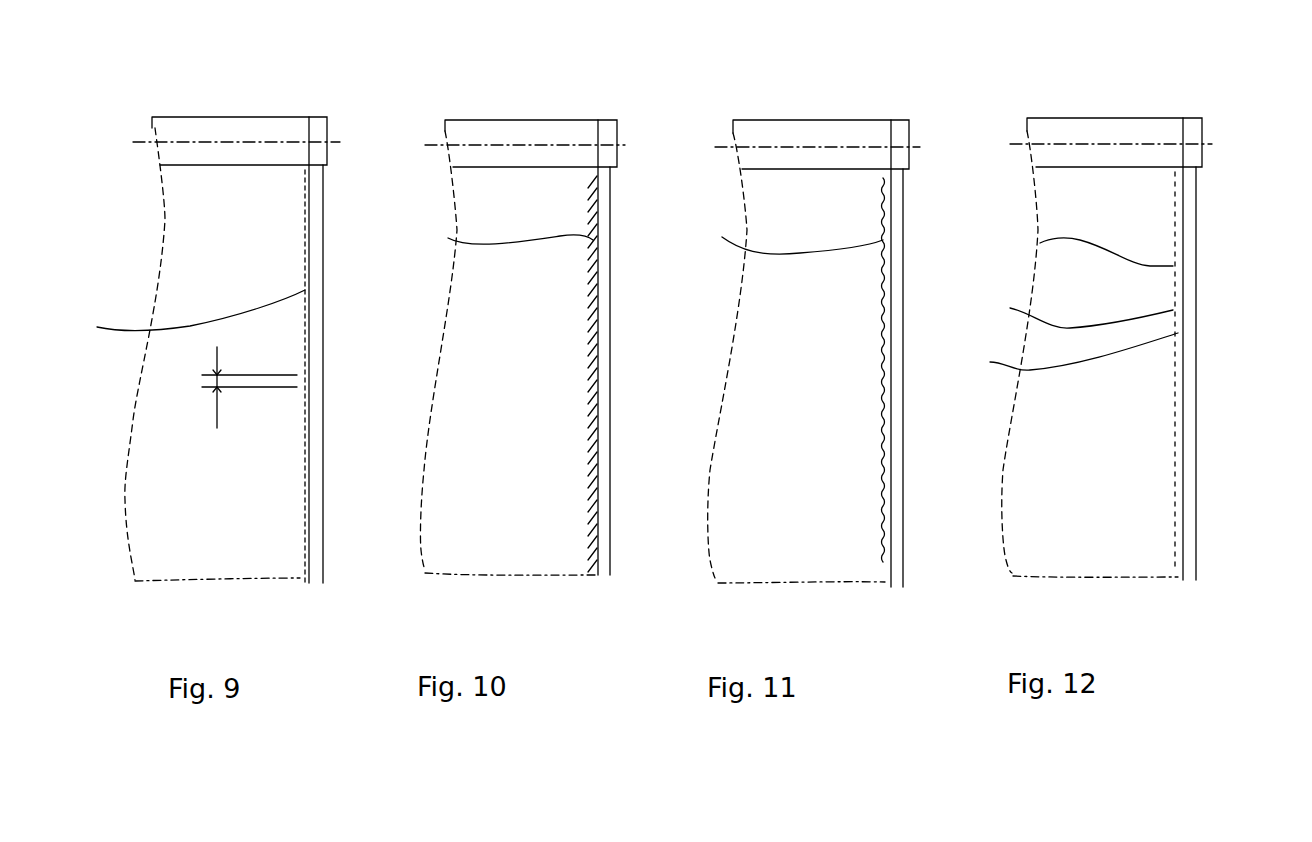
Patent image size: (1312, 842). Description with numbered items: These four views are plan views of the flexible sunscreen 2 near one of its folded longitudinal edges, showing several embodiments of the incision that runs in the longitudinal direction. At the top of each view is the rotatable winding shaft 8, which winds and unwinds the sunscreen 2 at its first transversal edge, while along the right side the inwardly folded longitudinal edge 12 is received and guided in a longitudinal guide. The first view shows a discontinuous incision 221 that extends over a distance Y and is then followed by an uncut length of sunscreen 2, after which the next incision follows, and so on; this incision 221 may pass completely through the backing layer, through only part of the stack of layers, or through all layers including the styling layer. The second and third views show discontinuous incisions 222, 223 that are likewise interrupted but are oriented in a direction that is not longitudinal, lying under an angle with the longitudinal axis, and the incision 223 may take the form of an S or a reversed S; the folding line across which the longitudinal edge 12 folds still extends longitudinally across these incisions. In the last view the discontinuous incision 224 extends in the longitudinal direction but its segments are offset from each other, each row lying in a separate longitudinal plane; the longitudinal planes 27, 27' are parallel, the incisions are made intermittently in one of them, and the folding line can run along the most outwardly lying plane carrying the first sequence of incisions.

In FIG. 9, the flexible sunscreen 2 is at (153, 517).
In FIG. 10, the flexible sunscreen 2 is at (446, 434).
In FIG. 11, the flexible sunscreen 2 is at (737, 408).
In FIG. 12, the flexible sunscreen 2 is at (1027, 432).
In FIG. 9, the rotatable winding shaft 8 is at (270, 130).
In FIG. 10, the rotatable winding shaft 8 is at (580, 130).
In FIG. 11, the rotatable winding shaft 8 is at (878, 133).
In FIG. 12, the rotatable winding shaft 8 is at (1164, 132).
In FIG. 9, the longitudinal edge 12 is at (317, 507).
In FIG. 10, the longitudinal edge 12 is at (605, 518).
In FIG. 11, the longitudinal edge 12 is at (895, 532).
In FIG. 12, the longitudinal edge 12 is at (1190, 523).
In FIG. 9, the discontinuous incision 221 is at (170, 315).
In FIG. 10, the discontinuous incision 222 is at (490, 232).
In FIG. 11, the discontinuous incision 223 is at (784, 233).
In FIG. 12, the discontinuous incision 224 is at (1086, 246).
In FIG. 12, the longitudinal plane 27 is at (1076, 312).
In FIG. 12, the longitudinal plane 27' is at (1068, 356).
In FIG. 9, the distance Y is at (249, 388).